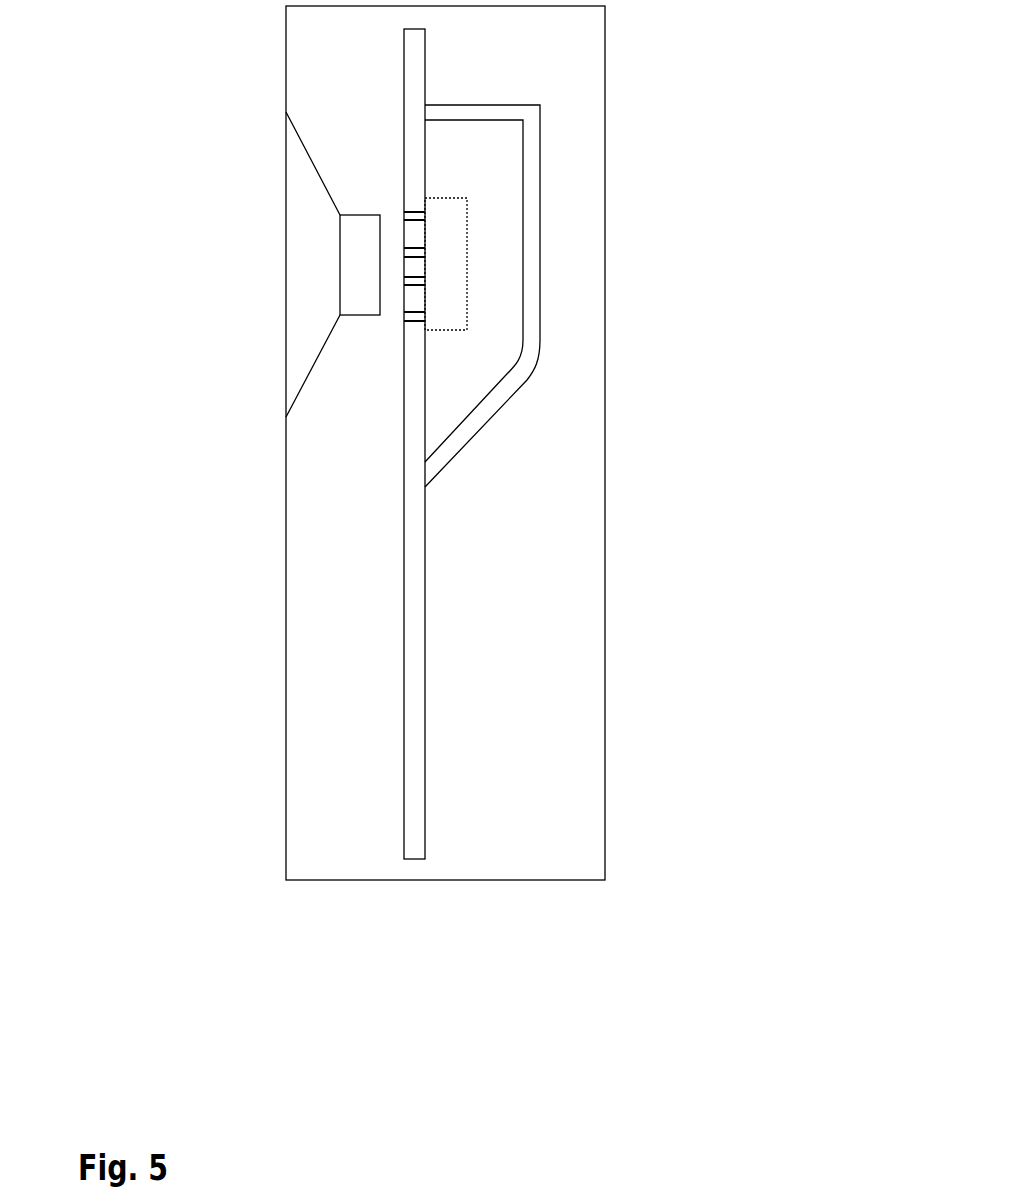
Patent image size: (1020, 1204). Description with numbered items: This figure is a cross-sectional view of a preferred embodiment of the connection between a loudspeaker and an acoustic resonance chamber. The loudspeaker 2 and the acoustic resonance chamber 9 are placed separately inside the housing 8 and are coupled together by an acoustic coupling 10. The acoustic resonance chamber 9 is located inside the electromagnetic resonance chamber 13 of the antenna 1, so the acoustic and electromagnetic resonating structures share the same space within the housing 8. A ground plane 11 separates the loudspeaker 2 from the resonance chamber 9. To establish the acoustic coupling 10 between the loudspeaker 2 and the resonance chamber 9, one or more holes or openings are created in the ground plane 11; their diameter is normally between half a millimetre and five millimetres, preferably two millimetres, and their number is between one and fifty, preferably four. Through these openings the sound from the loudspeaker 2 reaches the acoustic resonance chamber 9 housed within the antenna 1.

The antenna 1 is at (507, 410).
The loudspeaker 2 is at (317, 263).
The housing 8 is at (273, 692).
The acoustic resonance chamber 9 is at (457, 213).
The acoustic coupling 10 is at (425, 258).
The ground plane 11 is at (430, 636).
The electromagnetic resonance chamber 13 is at (482, 163).